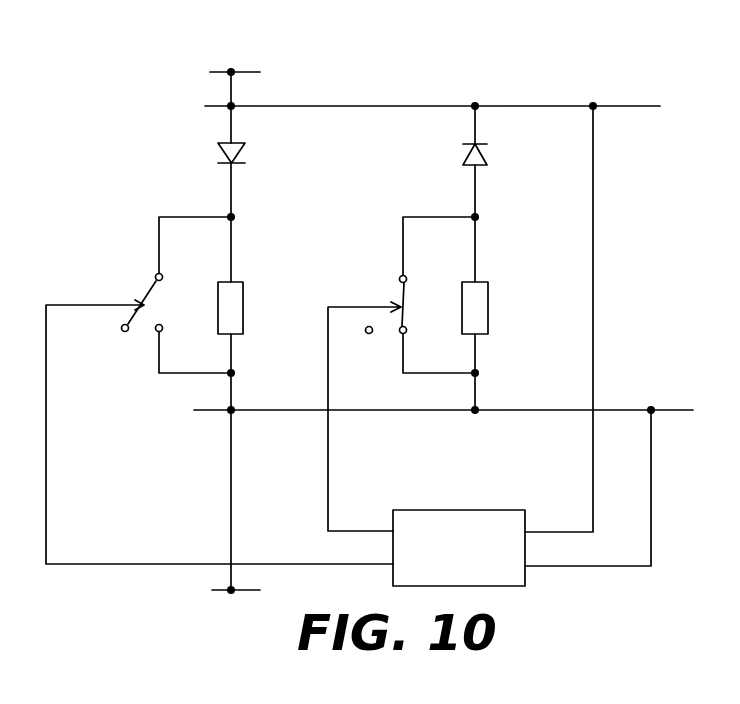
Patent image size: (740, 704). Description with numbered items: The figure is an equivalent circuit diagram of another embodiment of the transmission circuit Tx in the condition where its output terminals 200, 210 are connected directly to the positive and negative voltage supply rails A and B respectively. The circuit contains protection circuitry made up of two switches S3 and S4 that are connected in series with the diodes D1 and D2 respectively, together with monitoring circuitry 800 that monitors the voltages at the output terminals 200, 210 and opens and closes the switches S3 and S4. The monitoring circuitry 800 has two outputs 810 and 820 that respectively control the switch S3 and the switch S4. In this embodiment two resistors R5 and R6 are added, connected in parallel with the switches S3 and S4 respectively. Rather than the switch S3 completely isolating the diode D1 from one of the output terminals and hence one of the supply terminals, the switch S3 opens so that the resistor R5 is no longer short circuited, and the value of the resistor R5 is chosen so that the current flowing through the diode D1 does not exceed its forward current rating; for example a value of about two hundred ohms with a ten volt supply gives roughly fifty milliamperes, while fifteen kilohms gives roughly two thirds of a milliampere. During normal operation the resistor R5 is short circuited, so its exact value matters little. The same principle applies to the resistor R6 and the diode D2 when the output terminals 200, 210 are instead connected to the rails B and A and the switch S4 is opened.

The positive voltage supply rail A is at (232, 70).
The negative voltage supply rail B is at (231, 592).
The transmission circuit Tx is at (444, 86).
The output terminal 200 is at (593, 106).
The output terminal 210 is at (651, 410).
The diode D1 is at (218, 154).
The diode D2 is at (463, 156).
The resistor R5 is at (245, 316).
The resistor R6 is at (490, 316).
The switch S3 is at (153, 293).
The switch S4 is at (397, 298).
The monitoring circuitry 800 is at (527, 585).
The output of monitoring circuitry 810 is at (167, 565).
The output of monitoring circuitry 820 is at (336, 528).